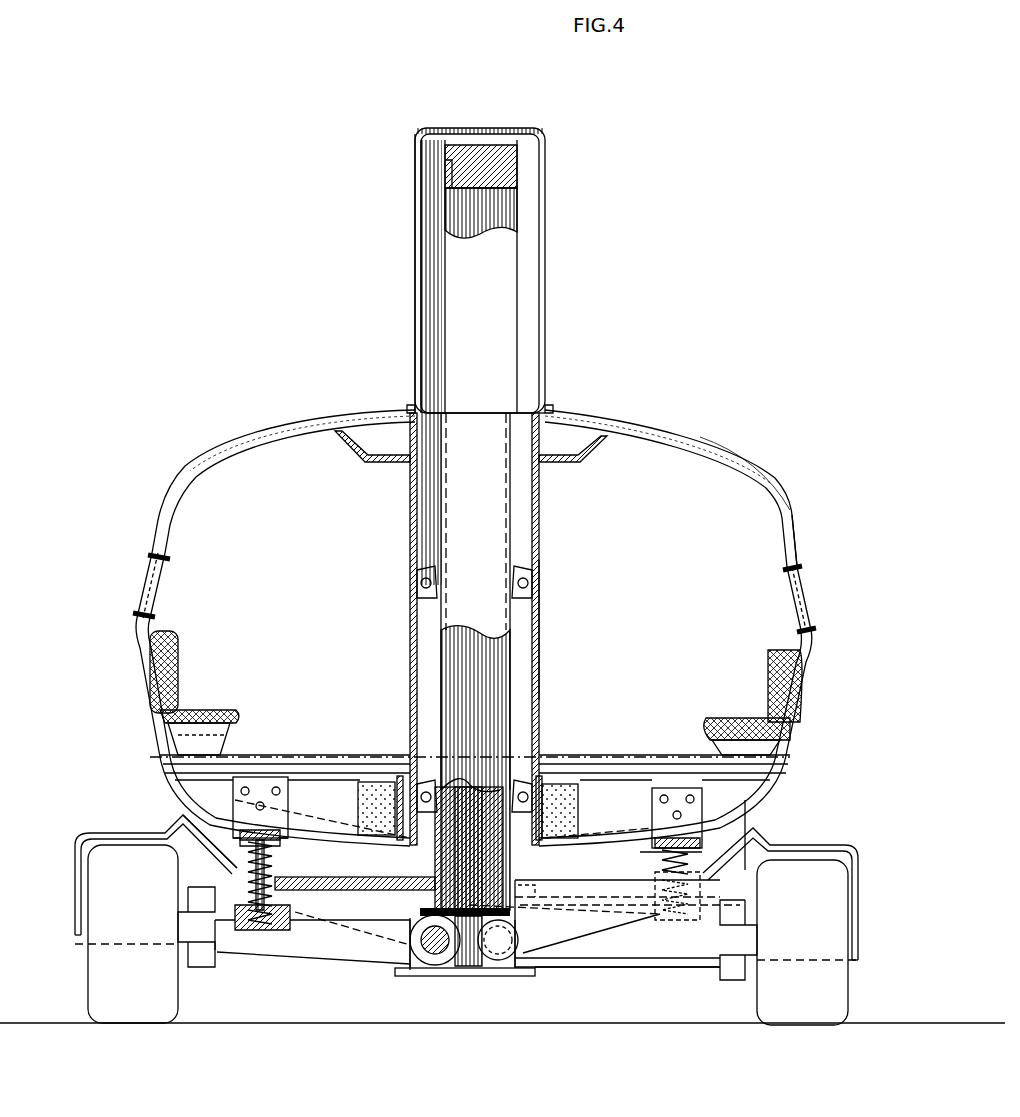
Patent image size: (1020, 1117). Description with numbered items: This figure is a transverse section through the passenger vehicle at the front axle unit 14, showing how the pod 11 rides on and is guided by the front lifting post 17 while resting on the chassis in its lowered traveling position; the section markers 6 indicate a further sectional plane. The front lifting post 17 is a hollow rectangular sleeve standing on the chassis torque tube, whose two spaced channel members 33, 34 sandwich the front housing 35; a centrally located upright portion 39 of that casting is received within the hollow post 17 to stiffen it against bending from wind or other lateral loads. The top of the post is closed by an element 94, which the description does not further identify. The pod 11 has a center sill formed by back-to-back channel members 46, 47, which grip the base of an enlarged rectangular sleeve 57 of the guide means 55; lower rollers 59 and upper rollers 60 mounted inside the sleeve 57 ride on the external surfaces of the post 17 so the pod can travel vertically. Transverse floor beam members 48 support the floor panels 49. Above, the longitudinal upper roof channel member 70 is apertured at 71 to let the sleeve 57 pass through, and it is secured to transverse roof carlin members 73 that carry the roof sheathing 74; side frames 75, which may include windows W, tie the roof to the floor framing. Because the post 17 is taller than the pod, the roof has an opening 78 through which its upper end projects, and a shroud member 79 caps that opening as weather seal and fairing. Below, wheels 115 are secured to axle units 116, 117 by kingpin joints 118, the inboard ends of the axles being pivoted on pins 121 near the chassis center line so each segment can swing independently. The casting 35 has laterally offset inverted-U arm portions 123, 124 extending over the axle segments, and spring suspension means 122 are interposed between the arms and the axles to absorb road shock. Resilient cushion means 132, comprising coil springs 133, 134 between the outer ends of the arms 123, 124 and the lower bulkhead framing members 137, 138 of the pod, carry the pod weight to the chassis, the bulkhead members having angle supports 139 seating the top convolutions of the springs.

The section line 6- 6 is at (480, 128).
The pod 11 is at (148, 756).
The front axle unit 14 is at (268, 984).
The front lifting post 17 is at (517, 212).
The channel member 33 is at (396, 980).
The channel member 34 is at (530, 883).
The front housing 35 is at (595, 956).
The upright portion 39 is at (480, 826).
The channel member 46 is at (550, 778).
The channel member 47 is at (386, 778).
The transverse floor beam member 48 is at (308, 757).
The floor panel 49 is at (666, 762).
The guide means 55 is at (554, 556).
The rectangular sleeve 57 is at (539, 640).
The lower roller means 59 is at (450, 778).
The upper roller means 60 is at (511, 584).
The longitudinal upper roof channel member 70 is at (576, 466).
The aperture 71 is at (408, 446).
The transverse roof carlin member 73 is at (660, 440).
The roof sheathing 74 is at (718, 458).
The side frame 75 is at (790, 517).
The roof opening 78 is at (540, 410).
The shroud member 79 is at (545, 268).
The plug 94 is at (517, 160).
The wheel 115 is at (88, 997).
The axle unit 116 is at (340, 958).
The axle unit 117 is at (602, 948).
The kingpin joint 118 is at (210, 968).
The pivot pin 121 is at (443, 953).
The spring suspension means 122 is at (276, 905).
The arm portion 123 is at (340, 877).
The arm portion 124 is at (572, 892).
The resilient cushion means 132 is at (291, 856).
The coil spring means 133 is at (272, 858).
The coil spring means 134 is at (660, 868).
The lower bulkhead framing member 137 is at (338, 812).
The lower bulkhead framing member 138 is at (632, 816).
The angle support 139 is at (240, 828).
The window W is at (140, 587).